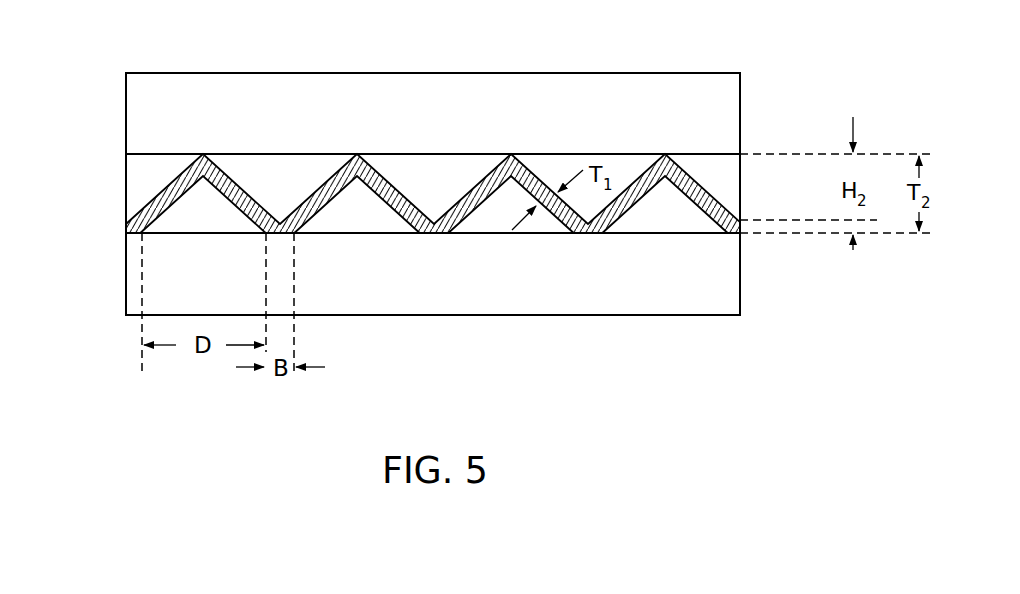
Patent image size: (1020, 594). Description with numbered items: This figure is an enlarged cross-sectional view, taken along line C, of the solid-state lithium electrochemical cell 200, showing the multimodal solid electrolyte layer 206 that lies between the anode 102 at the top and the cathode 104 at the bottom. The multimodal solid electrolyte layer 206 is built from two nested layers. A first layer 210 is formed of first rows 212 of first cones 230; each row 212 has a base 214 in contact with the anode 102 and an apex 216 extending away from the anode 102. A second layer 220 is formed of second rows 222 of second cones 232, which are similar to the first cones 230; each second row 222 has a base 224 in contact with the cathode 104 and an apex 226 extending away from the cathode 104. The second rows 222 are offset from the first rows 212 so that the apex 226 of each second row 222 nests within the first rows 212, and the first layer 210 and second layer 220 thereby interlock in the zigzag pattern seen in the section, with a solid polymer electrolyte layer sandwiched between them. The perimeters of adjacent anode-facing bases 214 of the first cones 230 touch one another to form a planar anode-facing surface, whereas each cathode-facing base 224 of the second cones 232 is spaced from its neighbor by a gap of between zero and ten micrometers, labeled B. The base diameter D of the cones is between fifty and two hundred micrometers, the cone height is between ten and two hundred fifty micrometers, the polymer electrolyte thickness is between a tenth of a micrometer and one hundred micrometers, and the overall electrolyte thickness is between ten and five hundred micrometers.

The anode 102 is at (707, 90).
The cathode 104 is at (712, 285).
The solid-state lithium electrochemical cell 200 is at (106, 109).
The multimodal solid electrolyte layer 206 is at (111, 208).
The first layer 210 is at (153, 170).
The first rows 212 is at (279, 177).
The base 214 is at (477, 162).
The apex 216 is at (422, 162).
The second layer 220 is at (680, 220).
The second rows 222 is at (337, 218).
The base 224 is at (363, 233).
The apex 226 is at (502, 193).
The first cones 230 is at (628, 168).
The second cones 232 is at (630, 222).